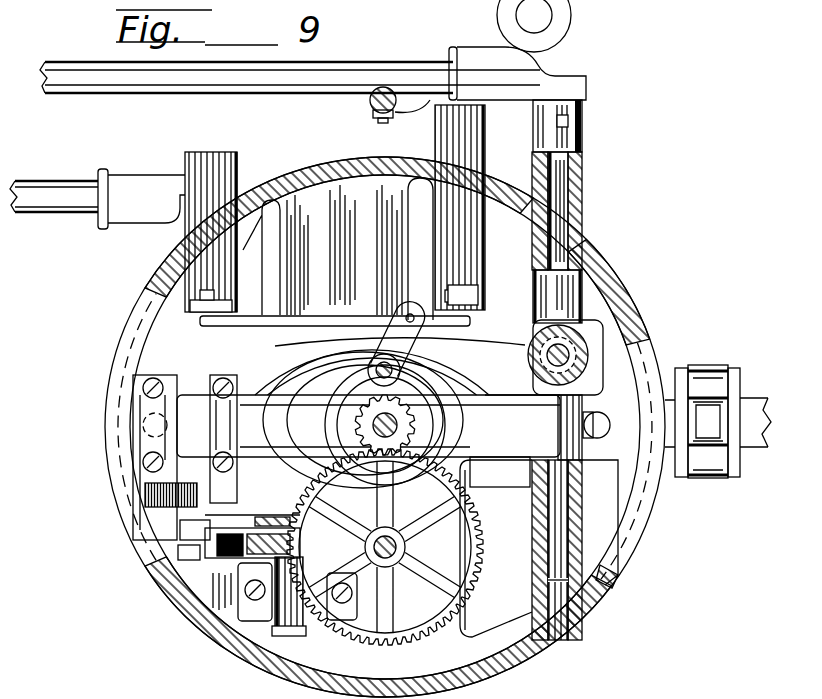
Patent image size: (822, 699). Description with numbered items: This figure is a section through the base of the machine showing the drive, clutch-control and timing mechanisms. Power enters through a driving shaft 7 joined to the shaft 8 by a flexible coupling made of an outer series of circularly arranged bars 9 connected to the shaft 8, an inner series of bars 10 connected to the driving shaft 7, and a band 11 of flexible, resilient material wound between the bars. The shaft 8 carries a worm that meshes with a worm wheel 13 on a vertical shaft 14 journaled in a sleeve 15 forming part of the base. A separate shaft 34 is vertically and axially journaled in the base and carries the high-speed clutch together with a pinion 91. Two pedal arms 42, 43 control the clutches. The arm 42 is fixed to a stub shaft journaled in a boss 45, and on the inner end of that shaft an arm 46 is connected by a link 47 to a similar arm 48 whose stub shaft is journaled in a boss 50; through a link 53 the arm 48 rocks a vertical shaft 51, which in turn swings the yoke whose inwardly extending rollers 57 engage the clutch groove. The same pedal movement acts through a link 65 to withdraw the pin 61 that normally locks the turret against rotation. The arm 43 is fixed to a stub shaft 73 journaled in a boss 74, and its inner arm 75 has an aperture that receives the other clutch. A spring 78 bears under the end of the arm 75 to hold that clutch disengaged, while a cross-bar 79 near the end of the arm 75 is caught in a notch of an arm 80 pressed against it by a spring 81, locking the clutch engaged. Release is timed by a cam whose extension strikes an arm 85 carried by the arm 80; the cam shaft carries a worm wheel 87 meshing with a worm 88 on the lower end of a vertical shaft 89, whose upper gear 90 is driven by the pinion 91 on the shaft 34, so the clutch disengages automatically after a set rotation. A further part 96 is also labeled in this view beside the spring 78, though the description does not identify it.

The driving shaft 7 is at (756, 442).
The shaft 8 is at (668, 440).
The bars 9 is at (730, 427).
The bars 10 is at (92, 483).
The band 11 is at (707, 367).
The worm wheel 13 is at (474, 356).
The vertical shaft 14 is at (602, 372).
The sleeve 15 is at (575, 340).
The shaft 34 is at (380, 428).
The arm 42 is at (68, 200).
The arm 43 is at (249, 76).
The boss 45 is at (200, 217).
The arm 46 is at (238, 290).
The link 47 is at (263, 320).
The arm 48 is at (482, 296).
The boss 50 is at (468, 226).
The vertical shaft 51 is at (335, 356).
The link 53 is at (418, 340).
The rollers 57 is at (385, 345).
The pin 61 is at (372, 108).
The link 65 is at (410, 125).
The stub shaft 73 is at (559, 229).
The boss 74 is at (585, 193).
The arm 75 is at (513, 400).
The spring 78 is at (136, 423).
The cross-bar 79 is at (222, 418).
The arm 80 is at (207, 507).
The spring 81 is at (148, 492).
The arm 85 is at (232, 533).
The worm wheel 87 is at (262, 552).
The worm 88 is at (458, 608).
The vertical shaft 89 is at (440, 543).
The gear 90 is at (475, 580).
The pinion 91 is at (406, 427).
The hole 96 is at (143, 447).